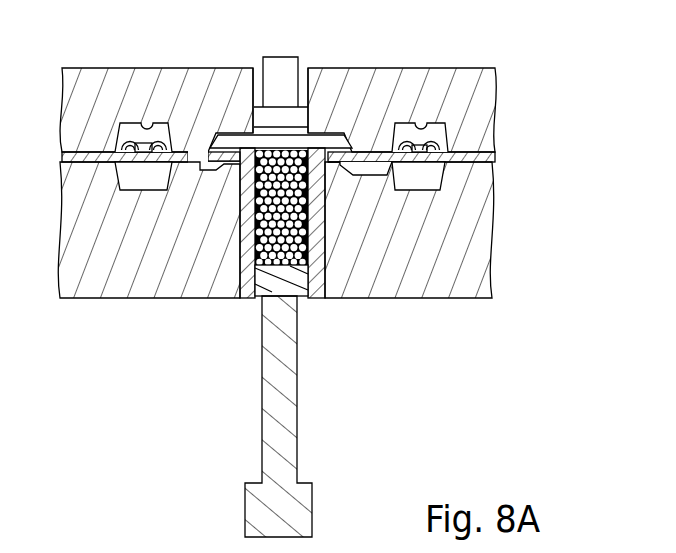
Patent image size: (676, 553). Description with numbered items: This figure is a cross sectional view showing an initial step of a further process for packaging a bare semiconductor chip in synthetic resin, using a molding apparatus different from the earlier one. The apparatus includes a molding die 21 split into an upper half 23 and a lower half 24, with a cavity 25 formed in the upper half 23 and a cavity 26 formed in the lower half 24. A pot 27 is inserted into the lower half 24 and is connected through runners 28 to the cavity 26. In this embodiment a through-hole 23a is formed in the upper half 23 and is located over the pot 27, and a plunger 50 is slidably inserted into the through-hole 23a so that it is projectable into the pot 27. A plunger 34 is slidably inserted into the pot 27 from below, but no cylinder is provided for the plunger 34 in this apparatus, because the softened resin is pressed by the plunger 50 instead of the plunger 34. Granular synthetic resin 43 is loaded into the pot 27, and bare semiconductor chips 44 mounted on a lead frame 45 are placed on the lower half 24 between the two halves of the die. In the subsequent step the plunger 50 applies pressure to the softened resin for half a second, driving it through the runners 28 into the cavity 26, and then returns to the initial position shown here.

The molding die 21 is at (570, 48).
The upper half 23 is at (500, 95).
The through-hole 23a is at (253, 67).
The lower half 24 is at (497, 210).
The cavity 25 is at (143, 128).
The cavity 26 is at (147, 175).
The pot 27 is at (315, 292).
The runners 28 is at (198, 160).
The plunger 34 is at (297, 430).
The granular synthetic resin 43 is at (272, 148).
The bare semiconductor chips 44 is at (140, 147).
The lead frame 45 is at (500, 155).
The plunger 50 is at (287, 57).